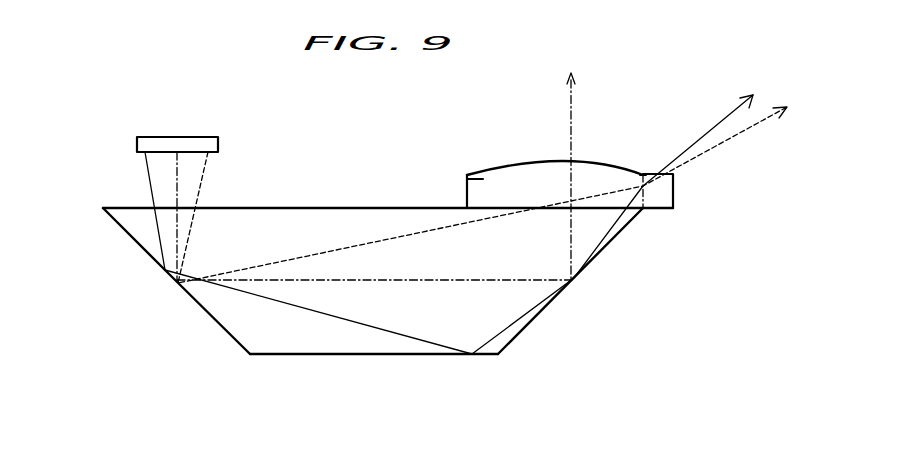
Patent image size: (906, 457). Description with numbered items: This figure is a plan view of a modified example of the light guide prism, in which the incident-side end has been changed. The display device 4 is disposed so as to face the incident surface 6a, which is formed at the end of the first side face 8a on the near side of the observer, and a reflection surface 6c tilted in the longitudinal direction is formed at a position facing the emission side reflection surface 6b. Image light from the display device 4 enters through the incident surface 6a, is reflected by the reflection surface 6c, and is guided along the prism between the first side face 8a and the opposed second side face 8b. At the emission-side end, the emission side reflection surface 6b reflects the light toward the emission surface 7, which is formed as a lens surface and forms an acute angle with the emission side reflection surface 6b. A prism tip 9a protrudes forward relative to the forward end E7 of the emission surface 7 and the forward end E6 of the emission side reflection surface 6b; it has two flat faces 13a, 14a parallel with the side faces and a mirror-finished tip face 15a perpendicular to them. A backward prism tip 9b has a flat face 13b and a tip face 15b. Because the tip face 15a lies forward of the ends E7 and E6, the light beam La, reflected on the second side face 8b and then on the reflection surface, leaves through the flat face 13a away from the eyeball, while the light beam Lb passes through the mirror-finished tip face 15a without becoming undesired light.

The display device 4 is at (177, 137).
The incident surface 6a is at (133, 208).
The emission side reflection surface 6b is at (537, 315).
The reflection surface 6c is at (205, 310).
The emission surface 7 is at (542, 163).
The first side face 8a is at (342, 207).
The second side face 8b is at (335, 355).
The prism tip 9a is at (673, 200).
The prism tip 9b is at (467, 182).
The flat face 13a is at (655, 175).
The flat face 13b is at (478, 178).
The flat face 14a is at (662, 210).
The tip face 15a is at (673, 183).
The tip face 15b is at (467, 193).
The forward end of the reflection surface E6 is at (645, 208).
The forward end of the emission surface E7 is at (642, 173).
The light beam La is at (392, 330).
The light beam Lb is at (383, 240).